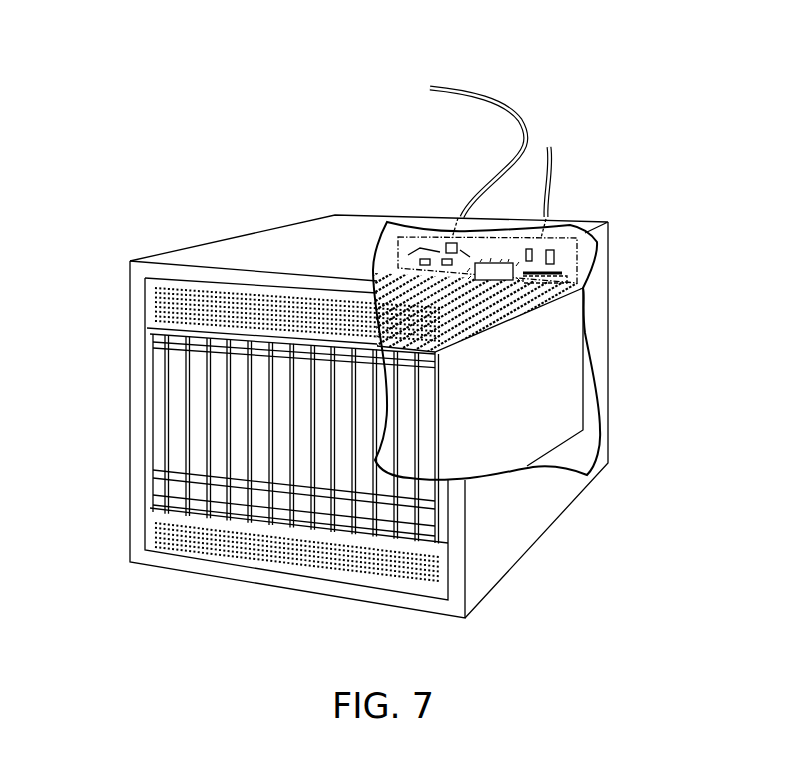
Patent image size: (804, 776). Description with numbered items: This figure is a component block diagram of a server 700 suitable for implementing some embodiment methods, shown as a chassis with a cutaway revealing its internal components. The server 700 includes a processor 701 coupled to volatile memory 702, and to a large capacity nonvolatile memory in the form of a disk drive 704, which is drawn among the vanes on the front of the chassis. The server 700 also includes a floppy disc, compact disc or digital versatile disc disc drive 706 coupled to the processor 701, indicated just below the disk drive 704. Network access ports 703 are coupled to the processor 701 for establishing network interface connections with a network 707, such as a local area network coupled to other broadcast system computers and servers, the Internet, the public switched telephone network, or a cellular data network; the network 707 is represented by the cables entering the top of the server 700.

The server 700 is at (277, 228).
The processor 701 is at (494, 276).
The volatile memory 702 is at (562, 278).
The network access ports 703 is at (398, 268).
The disk drive 704 is at (198, 386).
The disc drive 706 is at (178, 413).
The network 707 is at (522, 132).